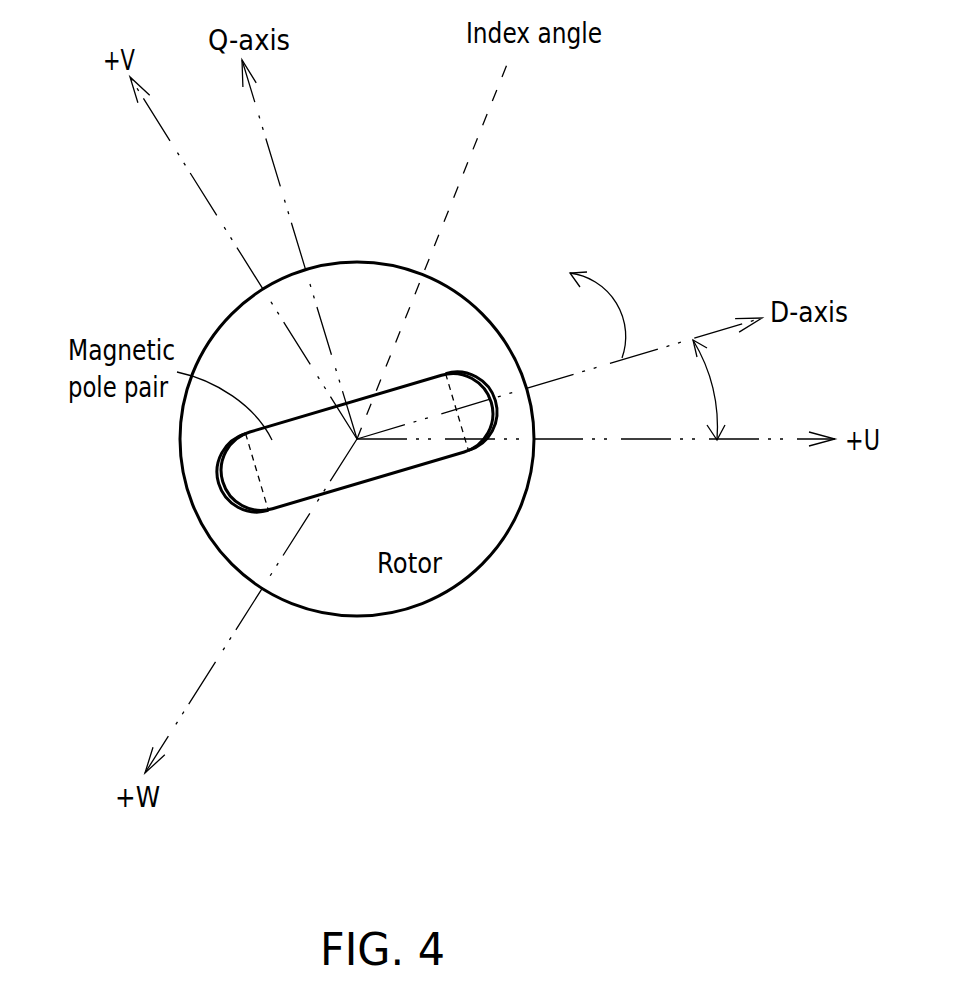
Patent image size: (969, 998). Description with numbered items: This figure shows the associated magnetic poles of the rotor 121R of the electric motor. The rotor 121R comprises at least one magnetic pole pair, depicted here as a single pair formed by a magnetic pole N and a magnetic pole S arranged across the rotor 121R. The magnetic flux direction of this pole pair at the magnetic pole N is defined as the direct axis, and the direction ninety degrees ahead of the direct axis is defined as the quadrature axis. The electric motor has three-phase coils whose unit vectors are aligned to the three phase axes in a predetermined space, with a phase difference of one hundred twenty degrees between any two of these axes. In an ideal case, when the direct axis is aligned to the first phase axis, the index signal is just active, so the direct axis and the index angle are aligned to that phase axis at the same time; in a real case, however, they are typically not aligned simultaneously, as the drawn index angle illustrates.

The rotor 121R is at (427, 600).
The magnetic pole N is at (471, 411).
The magnetic pole S is at (242, 473).